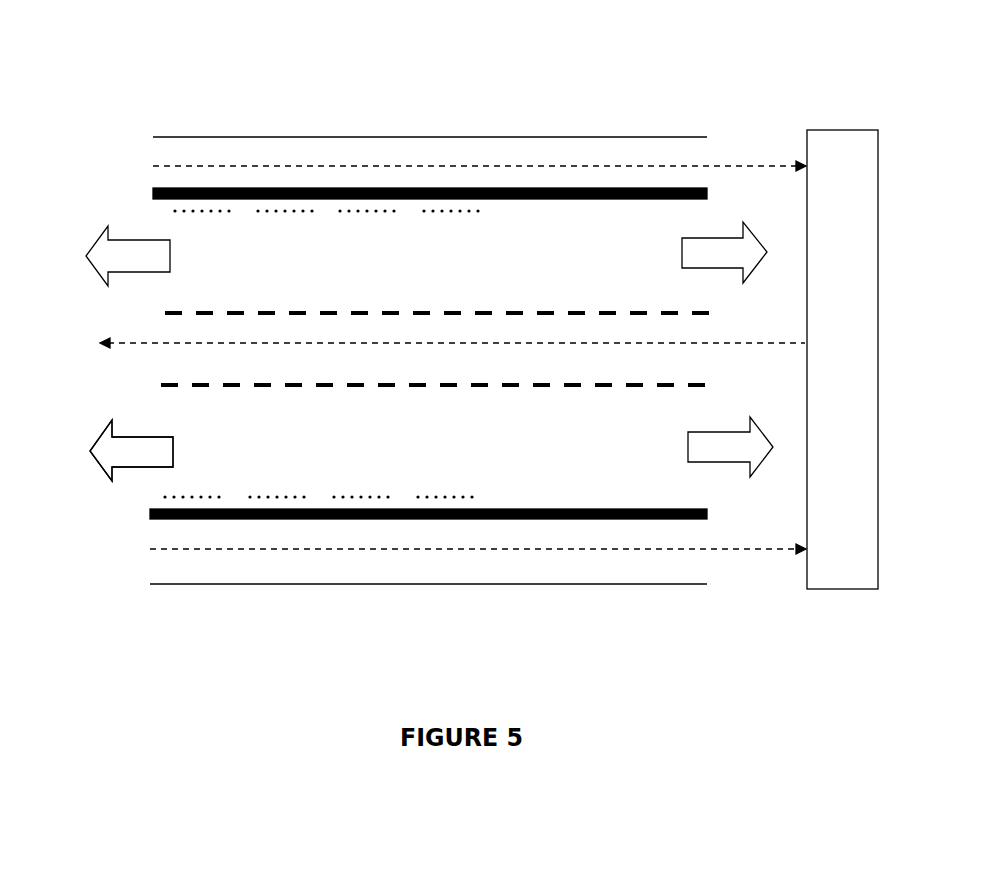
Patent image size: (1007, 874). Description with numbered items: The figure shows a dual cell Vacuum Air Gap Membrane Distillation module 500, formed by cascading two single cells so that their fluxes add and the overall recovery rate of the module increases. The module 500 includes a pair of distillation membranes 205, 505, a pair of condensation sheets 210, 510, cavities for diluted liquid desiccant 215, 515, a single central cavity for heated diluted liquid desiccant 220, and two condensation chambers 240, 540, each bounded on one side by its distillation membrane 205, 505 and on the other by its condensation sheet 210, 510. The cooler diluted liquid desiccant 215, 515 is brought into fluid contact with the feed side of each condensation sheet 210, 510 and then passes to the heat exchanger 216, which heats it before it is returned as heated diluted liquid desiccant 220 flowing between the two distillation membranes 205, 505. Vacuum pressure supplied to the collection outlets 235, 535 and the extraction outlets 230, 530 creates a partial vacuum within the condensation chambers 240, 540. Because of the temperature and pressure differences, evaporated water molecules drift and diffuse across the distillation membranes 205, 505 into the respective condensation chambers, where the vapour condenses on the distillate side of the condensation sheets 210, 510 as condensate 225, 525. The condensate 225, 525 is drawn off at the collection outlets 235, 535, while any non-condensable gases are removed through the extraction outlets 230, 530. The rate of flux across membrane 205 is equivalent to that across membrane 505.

The dual cell VAGMD module 500 is at (98, 72).
The distillation membrane 205 is at (631, 300).
The condensation sheet 210 is at (532, 188).
The diluted liquid desiccant 215 is at (735, 158).
The heat exchanger 216 is at (858, 301).
The heated diluted liquid desiccant 220 is at (100, 357).
The condensate 225 is at (432, 213).
The extraction outlet 230 is at (753, 245).
The collection outlet 235 is at (98, 248).
The condensation chamber 240 is at (484, 263).
The distillation membrane 505 is at (523, 388).
The condensation sheet 510 is at (507, 519).
The diluted liquid desiccant 515 is at (718, 549).
The condensate 525 is at (417, 479).
The extraction outlet 530 is at (747, 450).
The collection outlet 535 is at (115, 445).
The condensation chamber 540 is at (484, 442).